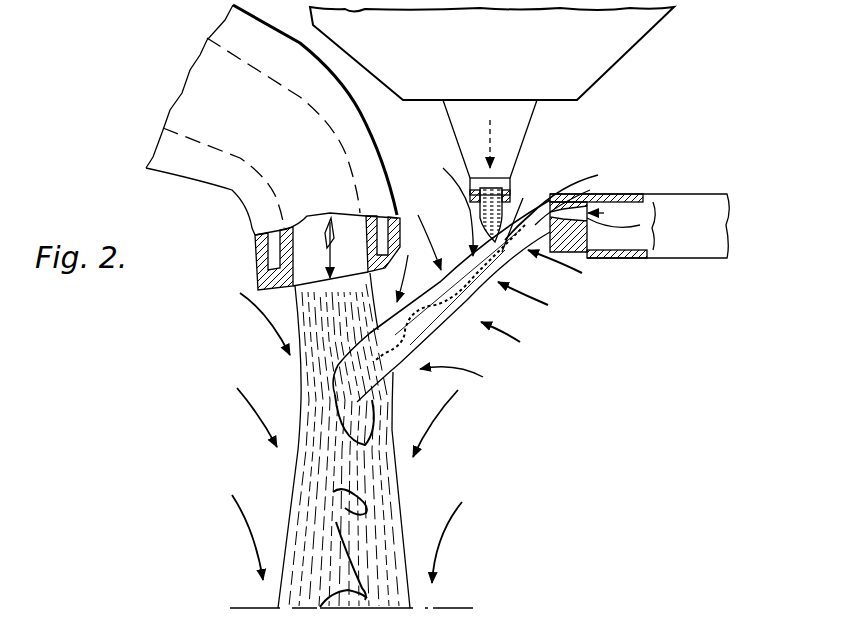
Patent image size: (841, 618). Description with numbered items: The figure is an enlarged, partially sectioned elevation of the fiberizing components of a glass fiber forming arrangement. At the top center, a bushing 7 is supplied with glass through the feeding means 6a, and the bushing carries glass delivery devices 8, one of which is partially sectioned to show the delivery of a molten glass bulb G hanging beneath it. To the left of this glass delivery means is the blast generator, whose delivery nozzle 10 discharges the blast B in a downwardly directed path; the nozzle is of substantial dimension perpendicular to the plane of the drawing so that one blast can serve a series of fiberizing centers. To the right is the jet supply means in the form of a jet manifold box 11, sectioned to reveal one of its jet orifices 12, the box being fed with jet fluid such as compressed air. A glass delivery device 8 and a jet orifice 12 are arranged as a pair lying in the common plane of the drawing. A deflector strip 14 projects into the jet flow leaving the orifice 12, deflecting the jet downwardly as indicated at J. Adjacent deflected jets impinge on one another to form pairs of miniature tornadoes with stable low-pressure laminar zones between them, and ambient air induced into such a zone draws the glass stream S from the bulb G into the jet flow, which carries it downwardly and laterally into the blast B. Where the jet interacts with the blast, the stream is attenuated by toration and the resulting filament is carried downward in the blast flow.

The delivery nozzle 10 is at (197, 93).
The feeding means 6a is at (617, 53).
The bushing 7 is at (472, 113).
The glass delivery device 8 is at (523, 198).
The molten glass bulb G is at (435, 224).
The jet manifold box 11 is at (683, 243).
The jet orifice 12 is at (566, 212).
The deflector strip 14 is at (552, 207).
The glass stream S is at (450, 320).
The deflected jet J is at (438, 340).
The blast B is at (303, 407).